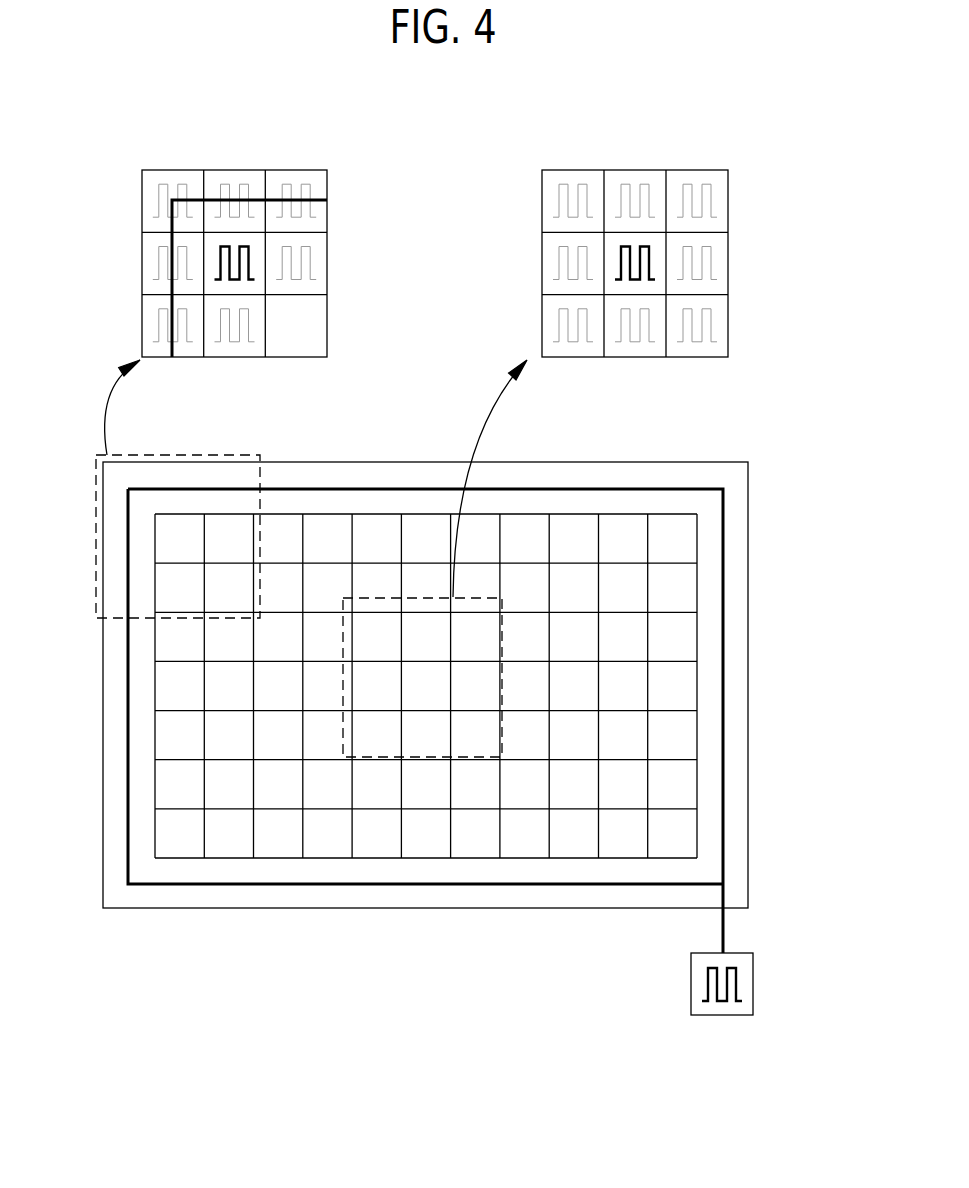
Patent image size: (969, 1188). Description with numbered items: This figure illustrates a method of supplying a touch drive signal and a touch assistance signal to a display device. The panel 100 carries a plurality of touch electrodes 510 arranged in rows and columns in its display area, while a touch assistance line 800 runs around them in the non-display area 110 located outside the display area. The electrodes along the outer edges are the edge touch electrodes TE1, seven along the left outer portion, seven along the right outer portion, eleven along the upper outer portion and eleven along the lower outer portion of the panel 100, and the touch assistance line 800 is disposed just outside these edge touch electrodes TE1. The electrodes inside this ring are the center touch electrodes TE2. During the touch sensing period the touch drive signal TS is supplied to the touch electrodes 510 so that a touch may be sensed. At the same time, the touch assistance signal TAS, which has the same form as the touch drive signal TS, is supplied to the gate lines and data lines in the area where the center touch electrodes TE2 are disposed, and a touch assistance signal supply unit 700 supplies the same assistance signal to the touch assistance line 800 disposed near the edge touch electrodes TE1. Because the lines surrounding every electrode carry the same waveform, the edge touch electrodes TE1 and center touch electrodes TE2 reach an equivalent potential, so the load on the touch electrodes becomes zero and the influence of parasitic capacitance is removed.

The panel 100 is at (748, 625).
The non-display area 110 is at (740, 743).
The touch electrodes 510 is at (687, 520).
The touch assistance line 800 is at (725, 780).
The touch assistance signal supply unit 700 is at (753, 980).
The touch assistance signal TAS is at (242, 195).
The touch drive signal TS is at (312, 262).
The edge touch electrodes TE1 is at (215, 283).
The center touch electrodes TE2 is at (657, 250).